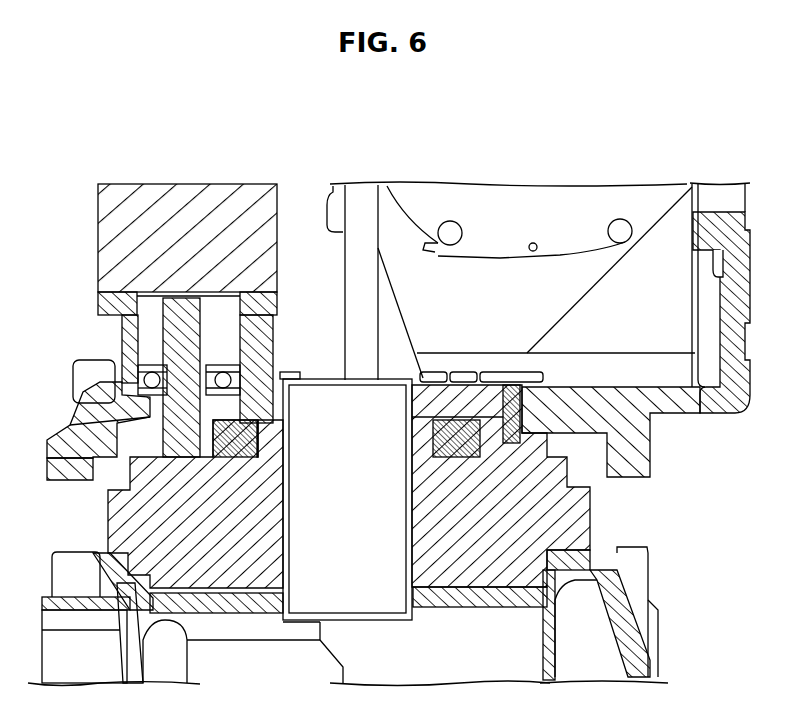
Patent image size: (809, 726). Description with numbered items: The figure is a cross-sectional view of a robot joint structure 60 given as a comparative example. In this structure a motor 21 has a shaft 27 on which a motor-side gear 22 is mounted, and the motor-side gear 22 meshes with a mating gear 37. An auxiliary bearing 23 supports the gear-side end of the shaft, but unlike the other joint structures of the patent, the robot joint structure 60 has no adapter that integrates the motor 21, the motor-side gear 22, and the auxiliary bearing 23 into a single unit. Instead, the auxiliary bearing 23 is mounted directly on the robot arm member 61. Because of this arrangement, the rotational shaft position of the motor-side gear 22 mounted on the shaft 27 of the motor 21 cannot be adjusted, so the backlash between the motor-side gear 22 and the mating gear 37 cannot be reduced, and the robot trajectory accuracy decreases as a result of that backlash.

The motor 21 is at (189, 207).
The motor-side gear 22 is at (84, 427).
The auxiliary bearing 23 is at (137, 378).
The shaft 27 is at (193, 340).
The mating gear 37 is at (233, 440).
The robot joint structure 60 is at (683, 139).
The robot arm member 61 is at (50, 488).